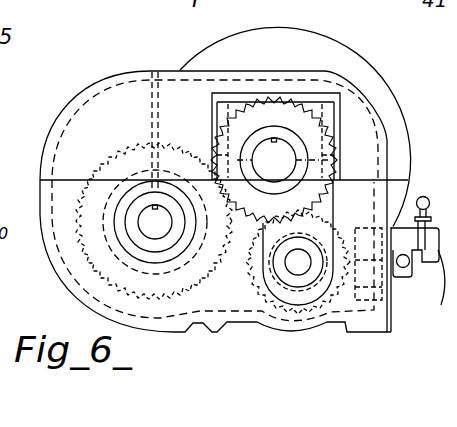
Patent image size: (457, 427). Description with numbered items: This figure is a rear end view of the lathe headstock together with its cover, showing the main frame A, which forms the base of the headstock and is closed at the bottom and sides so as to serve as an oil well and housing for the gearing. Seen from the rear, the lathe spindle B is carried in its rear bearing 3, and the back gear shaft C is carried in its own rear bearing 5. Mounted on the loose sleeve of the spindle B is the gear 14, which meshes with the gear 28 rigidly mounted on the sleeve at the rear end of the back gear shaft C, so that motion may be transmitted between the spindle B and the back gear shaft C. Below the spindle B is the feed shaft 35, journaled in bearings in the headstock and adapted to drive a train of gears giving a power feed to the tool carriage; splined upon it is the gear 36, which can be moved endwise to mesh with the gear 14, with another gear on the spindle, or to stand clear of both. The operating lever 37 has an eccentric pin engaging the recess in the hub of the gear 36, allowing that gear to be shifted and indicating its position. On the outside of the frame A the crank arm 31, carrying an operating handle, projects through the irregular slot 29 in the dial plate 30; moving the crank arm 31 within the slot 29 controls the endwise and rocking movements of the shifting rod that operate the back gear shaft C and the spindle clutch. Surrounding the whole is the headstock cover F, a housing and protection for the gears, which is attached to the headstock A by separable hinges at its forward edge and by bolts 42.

The rear bearing 3 is at (298, 181).
The rear bearing 5 is at (164, 243).
The gear 14 is at (332, 130).
The gear 28 is at (90, 268).
The irregular slot 29 is at (430, 240).
The dial plate 30 is at (433, 289).
The crank arm 31 is at (427, 184).
The feed shaft 35 is at (297, 265).
The gear 36 is at (252, 283).
The operating lever 37 is at (403, 268).
The bolts 42 is at (163, 101).
The main frame A is at (44, 257).
The lathe spindle B is at (274, 160).
The back gear shaft C is at (155, 222).
The headstock cover F is at (314, 61).